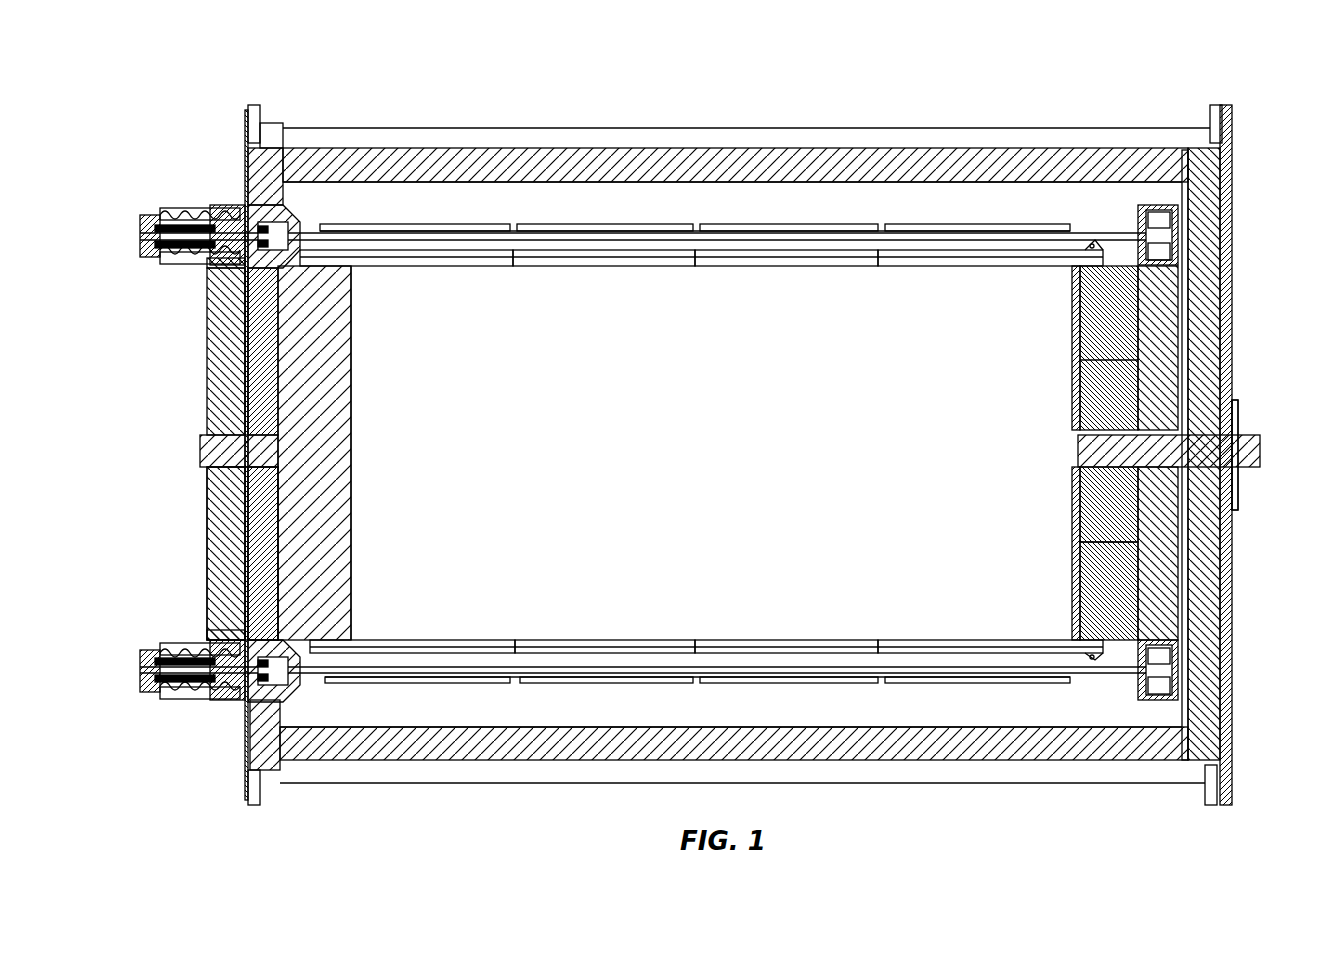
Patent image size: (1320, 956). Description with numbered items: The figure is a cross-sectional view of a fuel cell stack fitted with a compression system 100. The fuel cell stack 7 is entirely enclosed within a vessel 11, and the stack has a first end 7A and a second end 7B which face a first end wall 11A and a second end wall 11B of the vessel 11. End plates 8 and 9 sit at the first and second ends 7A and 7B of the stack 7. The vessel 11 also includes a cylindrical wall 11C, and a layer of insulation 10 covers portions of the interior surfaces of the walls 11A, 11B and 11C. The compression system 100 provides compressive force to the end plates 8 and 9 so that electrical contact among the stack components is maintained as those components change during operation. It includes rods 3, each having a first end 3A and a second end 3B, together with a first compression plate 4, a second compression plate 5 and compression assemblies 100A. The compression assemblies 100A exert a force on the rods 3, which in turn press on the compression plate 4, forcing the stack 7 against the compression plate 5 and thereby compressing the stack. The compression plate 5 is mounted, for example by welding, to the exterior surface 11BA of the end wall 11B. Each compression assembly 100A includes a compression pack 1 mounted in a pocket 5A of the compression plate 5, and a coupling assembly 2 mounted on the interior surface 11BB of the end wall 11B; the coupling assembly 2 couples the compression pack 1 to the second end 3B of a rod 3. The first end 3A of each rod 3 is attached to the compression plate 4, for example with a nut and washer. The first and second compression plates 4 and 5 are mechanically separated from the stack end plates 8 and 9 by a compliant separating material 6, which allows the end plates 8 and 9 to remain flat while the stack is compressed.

The compression pack 1 is at (160, 200).
The compression assembly 100A is at (210, 200).
The coupling assembly 2 is at (275, 218).
The compression system 100 is at (436, 212).
The cylindrical wall 11C is at (612, 148).
The layer of insulation 10 is at (710, 160).
The rod 3 is at (800, 232).
The vessel 11 is at (905, 132).
The second end of rod 3B is at (300, 232).
The fuel cell stack 7 is at (640, 330).
The first end of rod 3A is at (1115, 232).
The first end wall 11A is at (1222, 362).
The pocket 5A is at (218, 262).
The second end wall 11B is at (245, 332).
The exterior surface of end wall 11BA is at (245, 365).
The interior surface of end wall 11BB is at (248, 372).
The second compression plate 5 is at (212, 418).
The end plate 9 is at (312, 440).
The second end of stack 7B is at (352, 505).
The compliant separating material 6 is at (262, 545).
The first compression plate 4 is at (1150, 315).
The end plate 8 is at (1088, 455).
The first end of stack 7A is at (1080, 566).